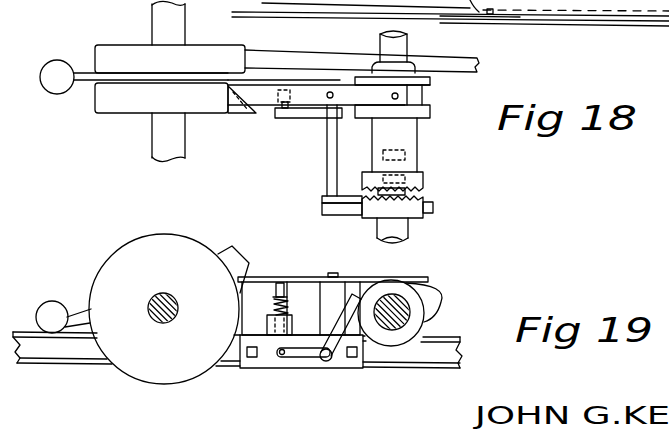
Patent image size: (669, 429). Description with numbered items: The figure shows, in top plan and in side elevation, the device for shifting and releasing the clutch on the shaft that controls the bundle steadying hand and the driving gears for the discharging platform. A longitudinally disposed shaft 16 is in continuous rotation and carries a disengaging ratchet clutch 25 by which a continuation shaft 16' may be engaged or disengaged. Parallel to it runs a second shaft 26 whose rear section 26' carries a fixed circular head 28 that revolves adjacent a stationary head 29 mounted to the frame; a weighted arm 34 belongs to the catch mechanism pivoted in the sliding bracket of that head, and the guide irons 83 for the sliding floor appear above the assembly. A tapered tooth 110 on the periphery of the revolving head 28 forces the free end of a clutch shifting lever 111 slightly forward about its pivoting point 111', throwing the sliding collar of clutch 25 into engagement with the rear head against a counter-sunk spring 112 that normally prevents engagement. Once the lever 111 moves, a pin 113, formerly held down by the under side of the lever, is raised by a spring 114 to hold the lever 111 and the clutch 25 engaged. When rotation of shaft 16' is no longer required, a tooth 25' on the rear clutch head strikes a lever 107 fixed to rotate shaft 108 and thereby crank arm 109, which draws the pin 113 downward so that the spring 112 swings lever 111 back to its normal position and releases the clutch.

In FIG. 18, the longitudinally disposed shaft 16 is at (403, 52).
In FIG. 18, the continuation shaft 16' is at (412, 236).
In FIG. 18, the disengaging ratchet clutch 25 is at (426, 183).
In FIG. 19, the disengaging ratchet clutch 25 is at (409, 307).
In FIG. 18, the tooth 25' is at (418, 211).
In FIG. 19, the tooth 25' is at (443, 302).
In FIG. 18, the second shaft 26 is at (181, 23).
In FIG. 18, the rear section of shaft 26' is at (183, 138).
In FIG. 19, the rear section of shaft 26' is at (173, 356).
In FIG. 18, the circular head 28 is at (135, 103).
In FIG. 19, the circular head 28 is at (195, 253).
In FIG. 18, the stationary head 29 is at (132, 51).
In FIG. 18, the weighted arm 34 is at (82, 70).
In FIG. 19, the weighted arm 34 is at (78, 314).
In FIG. 18, the guide irons 83 is at (472, 21).
In FIG. 18, the lever 107 is at (347, 210).
In FIG. 19, the lever 107 is at (326, 339).
In FIG. 18, the shaft 108 is at (328, 168).
In FIG. 19, the shaft 108 is at (328, 363).
In FIG. 18, the crank arm 109 is at (292, 118).
In FIG. 19, the crank arm 109 is at (286, 358).
In FIG. 18, the tooth 110 is at (246, 108).
In FIG. 19, the tooth 110 is at (236, 266).
In FIG. 18, the clutch shifting lever 111 is at (329, 123).
In FIG. 19, the clutch shifting lever 111 is at (333, 288).
In FIG. 18, the pivoting point 111' is at (346, 62).
In FIG. 19, the pivoting point 111' is at (355, 265).
In FIG. 18, the spring 112 is at (323, 193).
In FIG. 19, the pin 113 is at (280, 288).
In FIG. 19, the spring 114 is at (289, 307).